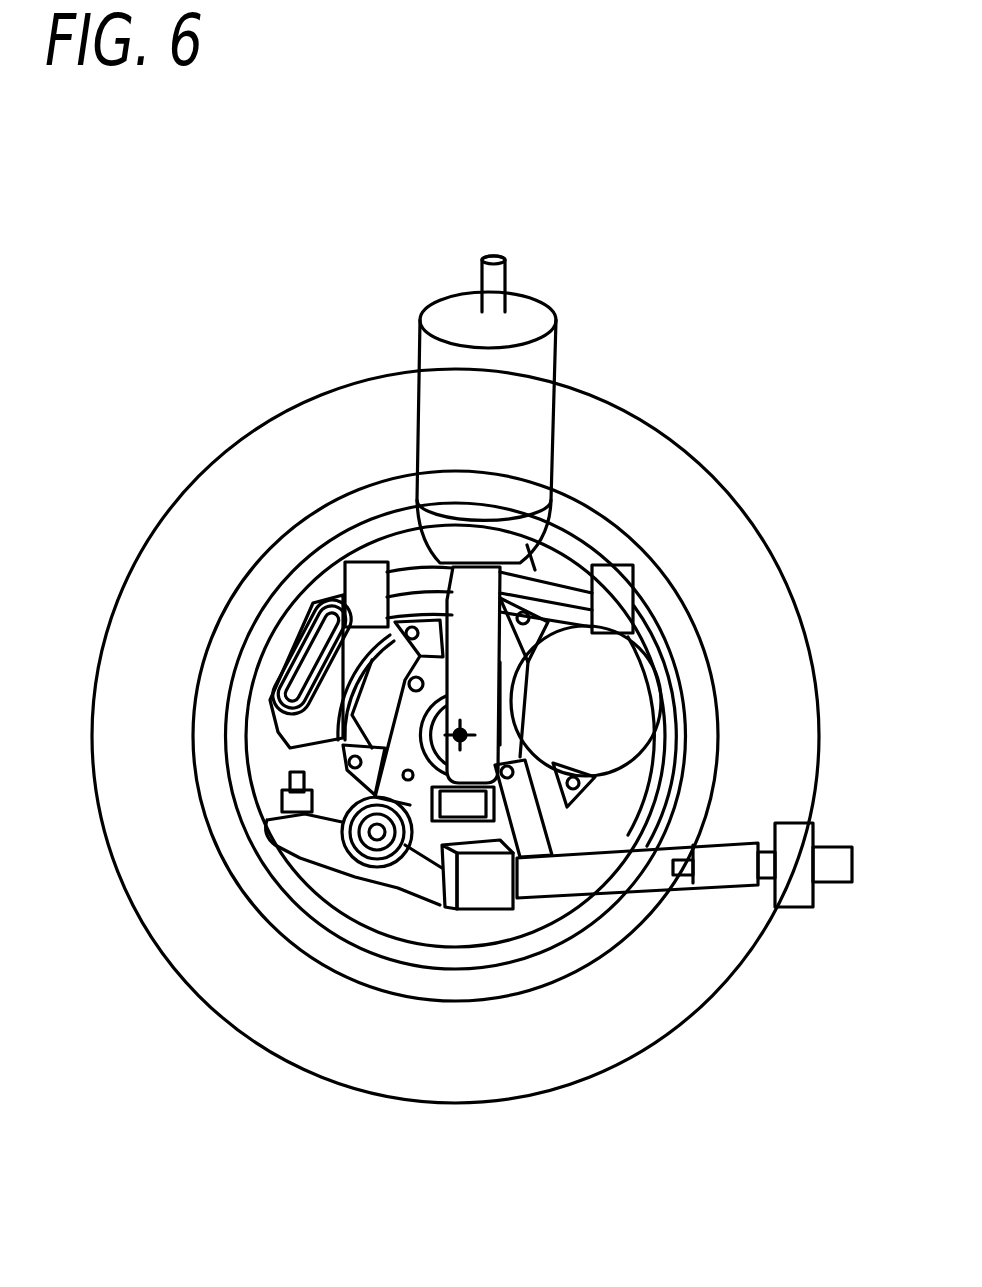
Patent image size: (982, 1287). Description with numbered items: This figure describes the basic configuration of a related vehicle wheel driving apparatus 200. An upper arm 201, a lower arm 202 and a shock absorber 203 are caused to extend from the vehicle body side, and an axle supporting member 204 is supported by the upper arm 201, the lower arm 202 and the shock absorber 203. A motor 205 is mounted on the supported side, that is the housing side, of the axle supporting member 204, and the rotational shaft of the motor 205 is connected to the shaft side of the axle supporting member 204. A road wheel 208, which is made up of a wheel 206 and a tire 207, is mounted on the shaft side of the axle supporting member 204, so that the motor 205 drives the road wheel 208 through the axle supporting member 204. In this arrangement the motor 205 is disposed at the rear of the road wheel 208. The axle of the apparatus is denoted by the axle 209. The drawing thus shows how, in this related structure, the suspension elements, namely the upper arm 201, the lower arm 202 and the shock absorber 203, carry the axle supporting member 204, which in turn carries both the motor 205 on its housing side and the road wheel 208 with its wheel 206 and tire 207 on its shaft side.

The vehicle wheel driving apparatus 200 is at (268, 300).
The upper arm 201 is at (557, 578).
The lower arm 202 is at (658, 880).
The shock absorber 203 is at (522, 312).
The axle supporting member 204 is at (568, 822).
The motor 205 is at (633, 680).
The wheel 206 is at (260, 607).
The tire 207 is at (200, 477).
The road wheel 208 is at (225, 422).
The axle 209 is at (547, 857).